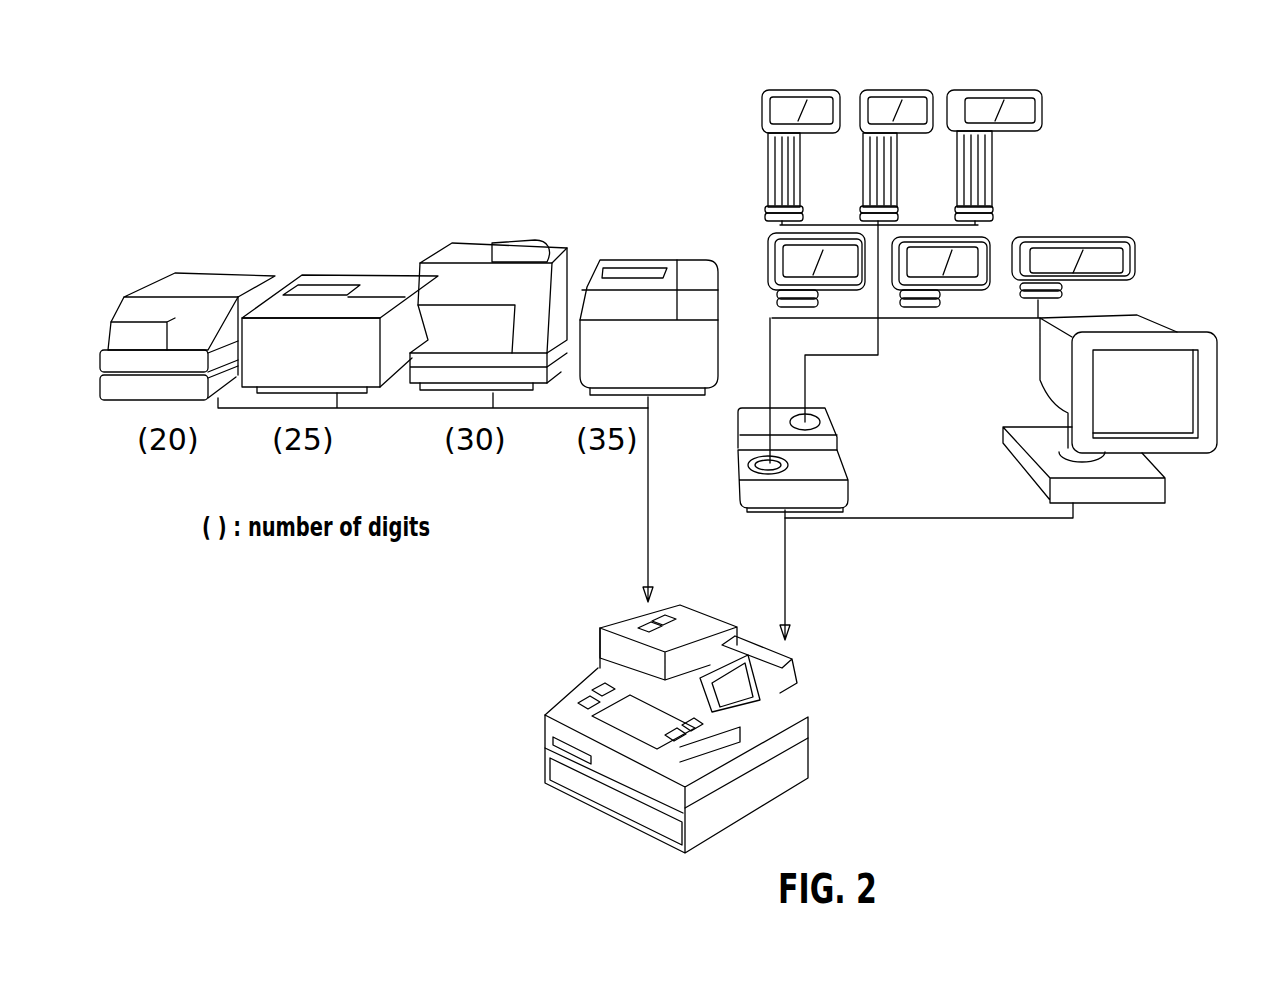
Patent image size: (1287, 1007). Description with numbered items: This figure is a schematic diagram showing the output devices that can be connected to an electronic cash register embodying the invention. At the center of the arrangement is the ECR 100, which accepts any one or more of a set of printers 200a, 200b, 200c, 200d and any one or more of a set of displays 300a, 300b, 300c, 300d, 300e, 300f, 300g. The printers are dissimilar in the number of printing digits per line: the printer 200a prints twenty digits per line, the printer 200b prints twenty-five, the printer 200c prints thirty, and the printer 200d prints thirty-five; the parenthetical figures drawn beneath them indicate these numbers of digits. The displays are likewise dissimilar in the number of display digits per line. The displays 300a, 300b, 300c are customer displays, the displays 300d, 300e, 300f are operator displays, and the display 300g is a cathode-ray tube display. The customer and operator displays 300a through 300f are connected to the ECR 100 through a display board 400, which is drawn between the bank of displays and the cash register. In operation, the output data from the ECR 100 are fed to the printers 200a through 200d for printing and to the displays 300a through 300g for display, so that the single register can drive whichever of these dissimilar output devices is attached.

The printer 200a is at (192, 273).
The printer 200b is at (323, 273).
The printer 200c is at (467, 242).
The printer 200d is at (633, 260).
The customer display 300a is at (788, 88).
The customer display 300b is at (887, 88).
The customer display 300c is at (993, 88).
The operator display 300d is at (770, 267).
The operator display 300e is at (984, 240).
The operator display 300f is at (1097, 235).
The cathode-ray tube (CRT) display 300g is at (1175, 330).
The display board 400 is at (843, 453).
The ECR 100 is at (810, 711).